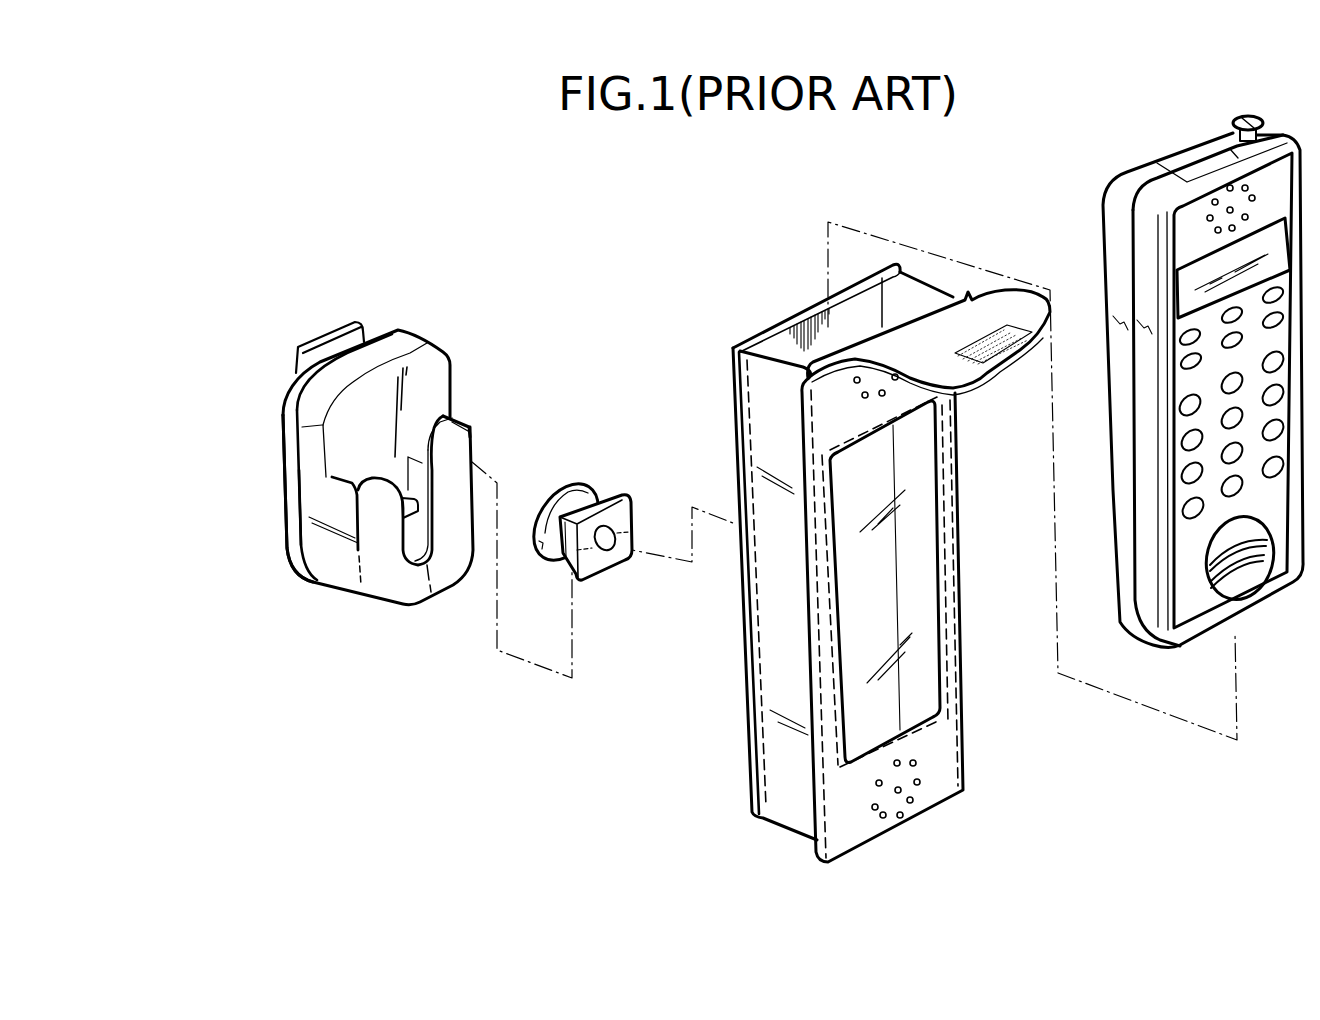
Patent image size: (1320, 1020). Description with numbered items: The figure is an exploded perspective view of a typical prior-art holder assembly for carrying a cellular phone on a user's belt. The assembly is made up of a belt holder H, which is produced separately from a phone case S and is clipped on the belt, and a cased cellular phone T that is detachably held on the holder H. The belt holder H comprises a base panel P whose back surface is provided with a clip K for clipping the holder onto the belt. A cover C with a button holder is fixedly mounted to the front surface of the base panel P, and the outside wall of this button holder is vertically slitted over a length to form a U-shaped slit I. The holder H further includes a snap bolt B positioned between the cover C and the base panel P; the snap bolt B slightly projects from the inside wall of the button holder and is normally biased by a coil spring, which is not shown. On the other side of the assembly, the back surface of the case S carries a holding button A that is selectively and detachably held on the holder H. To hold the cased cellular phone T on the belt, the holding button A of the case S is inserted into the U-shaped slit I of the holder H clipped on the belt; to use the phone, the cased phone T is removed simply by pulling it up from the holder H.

The cased cellular phone T is at (1294, 582).
The phone case S is at (837, 860).
The holding button A is at (589, 486).
The base panel P is at (293, 492).
The clip K is at (307, 333).
The belt holder H is at (301, 590).
The cover C is at (350, 580).
The snap bolt B is at (428, 460).
The U-shaped slit I is at (413, 497).